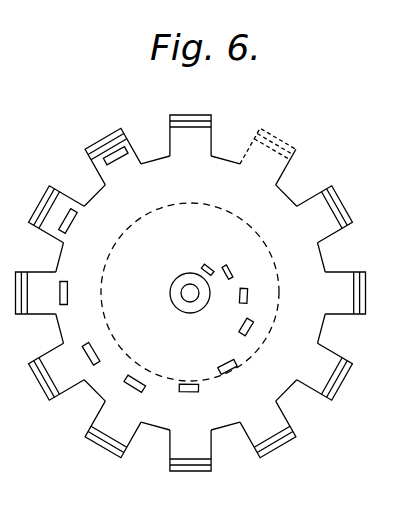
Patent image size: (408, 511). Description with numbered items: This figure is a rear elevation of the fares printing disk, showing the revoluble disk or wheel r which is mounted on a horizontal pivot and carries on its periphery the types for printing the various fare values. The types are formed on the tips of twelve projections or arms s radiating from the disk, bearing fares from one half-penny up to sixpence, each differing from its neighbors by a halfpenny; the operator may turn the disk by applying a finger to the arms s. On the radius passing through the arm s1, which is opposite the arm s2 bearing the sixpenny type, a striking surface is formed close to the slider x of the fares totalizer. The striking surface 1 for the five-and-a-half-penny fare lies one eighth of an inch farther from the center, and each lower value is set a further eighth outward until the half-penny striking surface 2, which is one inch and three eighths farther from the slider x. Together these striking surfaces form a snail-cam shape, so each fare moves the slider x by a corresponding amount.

The striking surface 2 is at (170, 127).
The revoluble disk or wheel r is at (157, 417).
The projections or arms s is at (200, 452).
The arm s1 is at (297, 152).
The arm s2 is at (93, 422).
The slider x is at (203, 266).
The striking surface 1 is at (247, 282).